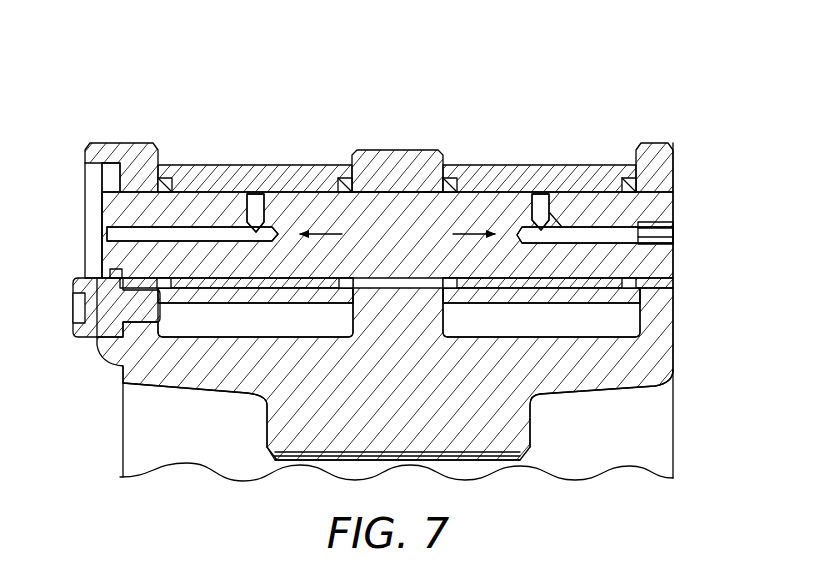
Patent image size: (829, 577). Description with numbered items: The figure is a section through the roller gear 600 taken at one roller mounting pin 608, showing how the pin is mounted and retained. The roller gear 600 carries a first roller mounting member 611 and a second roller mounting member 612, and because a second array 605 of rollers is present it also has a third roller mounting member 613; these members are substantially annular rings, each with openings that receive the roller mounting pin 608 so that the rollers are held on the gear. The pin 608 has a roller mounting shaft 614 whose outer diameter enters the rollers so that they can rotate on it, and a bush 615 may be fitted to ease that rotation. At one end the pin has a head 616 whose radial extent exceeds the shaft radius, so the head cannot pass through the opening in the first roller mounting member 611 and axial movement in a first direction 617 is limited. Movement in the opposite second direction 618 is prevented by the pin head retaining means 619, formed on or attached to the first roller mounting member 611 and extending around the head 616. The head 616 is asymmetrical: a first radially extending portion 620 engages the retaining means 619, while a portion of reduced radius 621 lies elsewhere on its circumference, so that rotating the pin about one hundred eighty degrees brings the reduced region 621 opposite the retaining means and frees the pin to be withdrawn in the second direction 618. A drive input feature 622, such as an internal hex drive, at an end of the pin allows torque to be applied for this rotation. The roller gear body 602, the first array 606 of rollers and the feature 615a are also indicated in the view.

The roller gear 600 is at (144, 103).
The base body 602 is at (379, 430).
The second array of rollers 605 is at (529, 141).
The left tube section 606 is at (266, 138).
The roller mounting pin 608 is at (668, 202).
The first roller mounting member 611 is at (159, 148).
The second roller mounting member 612 is at (381, 188).
The third roller mounting member 613 is at (651, 147).
The roller mounting shaft 614 is at (381, 243).
The bush 615 is at (262, 278).
The pocket 615a is at (173, 301).
The head 616 is at (113, 217).
The first direction 617 is at (468, 230).
The second direction 618 is at (330, 230).
The pin head retaining means 619 is at (93, 145).
The first radially extending portion 620 is at (103, 188).
The portion of reduced radius 621 is at (103, 263).
The drive input feature 622 is at (223, 232).